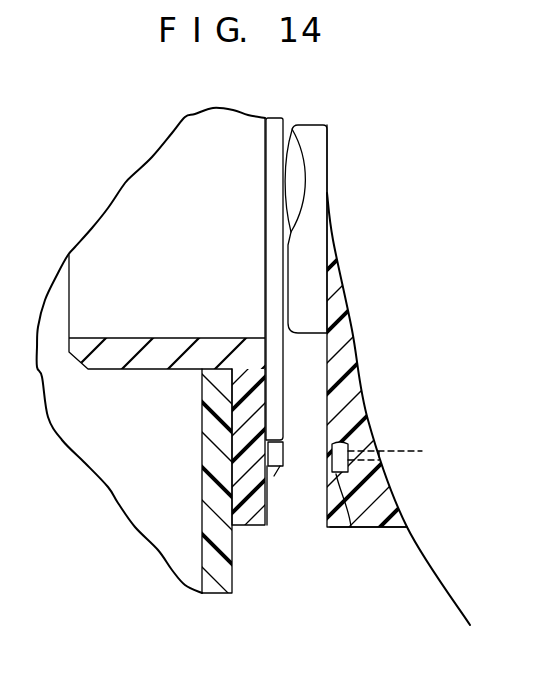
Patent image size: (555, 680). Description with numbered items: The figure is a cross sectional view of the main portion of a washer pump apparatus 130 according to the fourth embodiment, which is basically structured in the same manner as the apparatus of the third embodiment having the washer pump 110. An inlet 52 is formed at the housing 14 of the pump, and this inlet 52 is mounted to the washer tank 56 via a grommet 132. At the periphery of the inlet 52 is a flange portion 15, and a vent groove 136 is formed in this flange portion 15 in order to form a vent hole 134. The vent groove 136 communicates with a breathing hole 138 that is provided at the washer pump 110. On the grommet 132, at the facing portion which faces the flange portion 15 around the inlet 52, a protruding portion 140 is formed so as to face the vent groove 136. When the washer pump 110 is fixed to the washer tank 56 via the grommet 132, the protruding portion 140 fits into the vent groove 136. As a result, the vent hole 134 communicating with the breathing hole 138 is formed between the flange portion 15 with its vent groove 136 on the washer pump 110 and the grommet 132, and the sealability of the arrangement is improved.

The housing 14 is at (372, 528).
The flange portion 15 is at (325, 376).
The inlet 52 is at (307, 122).
The washer tank 56 is at (233, 586).
The washer pump 110 is at (406, 560).
The washer pump apparatus 130 is at (393, 256).
The grommet 132 is at (262, 526).
The vent hole 134 is at (351, 527).
The vent groove 136 is at (348, 443).
The breathing hole 138 is at (422, 451).
The protruding portion 140 is at (275, 436).